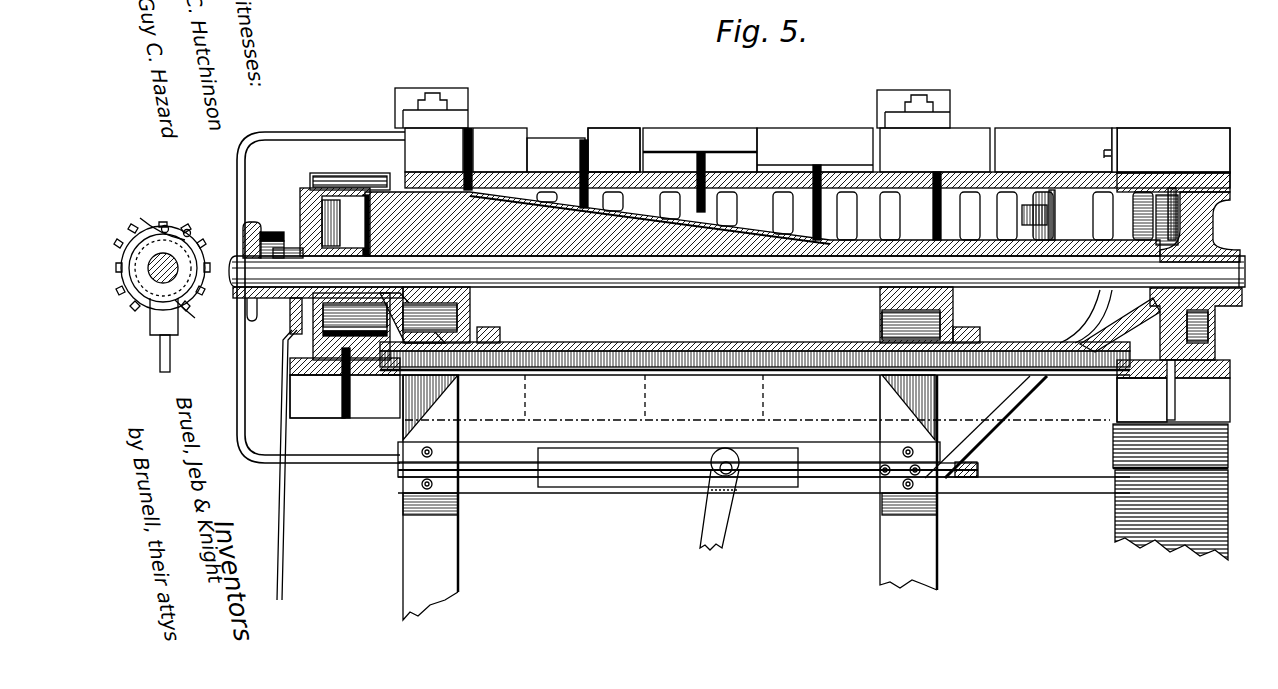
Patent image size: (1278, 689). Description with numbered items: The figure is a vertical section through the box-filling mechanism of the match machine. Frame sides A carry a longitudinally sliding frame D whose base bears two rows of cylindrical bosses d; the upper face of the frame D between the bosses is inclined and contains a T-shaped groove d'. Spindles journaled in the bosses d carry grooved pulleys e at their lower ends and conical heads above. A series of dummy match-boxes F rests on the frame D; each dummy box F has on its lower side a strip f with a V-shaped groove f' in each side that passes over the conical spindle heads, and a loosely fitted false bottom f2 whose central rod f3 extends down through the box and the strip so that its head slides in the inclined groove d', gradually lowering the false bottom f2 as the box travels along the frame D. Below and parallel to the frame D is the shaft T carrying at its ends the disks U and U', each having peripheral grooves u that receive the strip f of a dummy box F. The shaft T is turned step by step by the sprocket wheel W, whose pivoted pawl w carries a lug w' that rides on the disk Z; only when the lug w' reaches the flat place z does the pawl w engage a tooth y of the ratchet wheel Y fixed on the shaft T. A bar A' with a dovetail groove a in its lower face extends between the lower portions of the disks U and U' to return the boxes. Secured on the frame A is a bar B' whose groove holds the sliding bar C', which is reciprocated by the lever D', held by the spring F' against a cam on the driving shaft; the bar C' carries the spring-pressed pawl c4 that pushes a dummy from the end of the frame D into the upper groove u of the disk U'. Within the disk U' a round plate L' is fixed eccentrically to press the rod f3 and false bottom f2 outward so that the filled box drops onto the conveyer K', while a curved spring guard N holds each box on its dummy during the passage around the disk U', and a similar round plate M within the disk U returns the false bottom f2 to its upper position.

The bar C' is at (642, 310).
The groove u is at (343, 173).
The disk U is at (339, 270).
The pawl w is at (210, 227).
The lug w' is at (234, 227).
The disk Z is at (290, 247).
The flat place z is at (298, 232).
The teeth y is at (150, 248).
The sprocket-wheel W is at (140, 290).
The shaft T is at (152, 285).
The ratchet-wheel Y is at (221, 324).
The round plate M is at (424, 212).
The rod f3 is at (478, 146).
The dummy match-box F is at (760, 255).
The false bottom f2 is at (608, 146).
The strip f is at (755, 368).
The cylindrical boss d is at (845, 216).
The T-shaped groove d' is at (878, 190).
The grooved pulley e is at (663, 263).
The frame D is at (737, 282).
The bar A' is at (755, 319).
The dovetail-groove a is at (565, 366).
The frame side A is at (739, 497).
The bar B' is at (764, 453).
The spring F' is at (668, 456).
The lever D' is at (705, 499).
The spring-pressed pawl c4 is at (1118, 142).
The disk U' is at (1207, 227).
The round plate L' is at (1153, 324).
The curved guard N is at (1117, 440).
The conveyer K' is at (1150, 515).
The V-shaped groove f' is at (1053, 215).